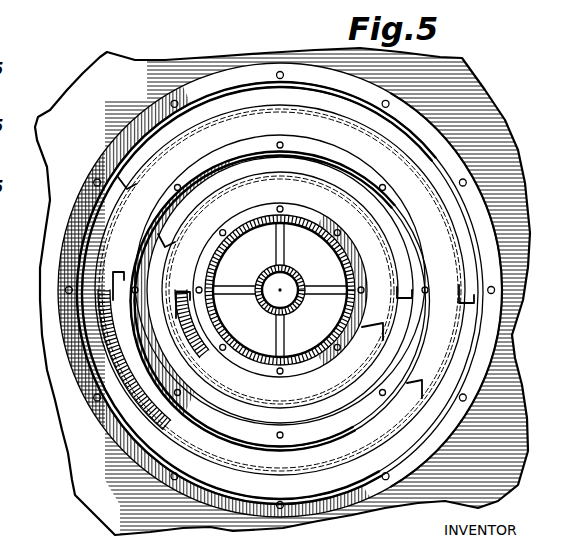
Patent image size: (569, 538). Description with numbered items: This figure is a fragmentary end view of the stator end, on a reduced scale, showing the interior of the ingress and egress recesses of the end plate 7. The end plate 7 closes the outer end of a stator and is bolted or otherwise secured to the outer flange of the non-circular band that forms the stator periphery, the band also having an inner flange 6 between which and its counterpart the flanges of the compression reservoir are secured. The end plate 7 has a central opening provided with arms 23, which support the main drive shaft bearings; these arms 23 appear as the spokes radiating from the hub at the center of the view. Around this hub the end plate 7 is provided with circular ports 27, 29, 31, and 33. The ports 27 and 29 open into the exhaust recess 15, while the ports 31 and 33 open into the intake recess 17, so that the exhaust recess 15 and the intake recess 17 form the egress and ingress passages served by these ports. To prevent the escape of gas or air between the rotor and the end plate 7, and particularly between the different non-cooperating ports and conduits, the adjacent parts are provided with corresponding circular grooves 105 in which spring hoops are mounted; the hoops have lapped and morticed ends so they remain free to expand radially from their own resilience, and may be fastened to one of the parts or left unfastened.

The inner flange 6 is at (247, 27).
The end plate 7 is at (145, 68).
The exhaust recess 15 is at (422, 237).
The intake recess 17 is at (348, 235).
The arms 23 is at (230, 292).
The circular port 27 is at (127, 195).
The circular port 29 is at (122, 258).
The circular port 31 is at (125, 275).
The circular port 33 is at (177, 292).
The circular grooves 105 is at (136, 184).